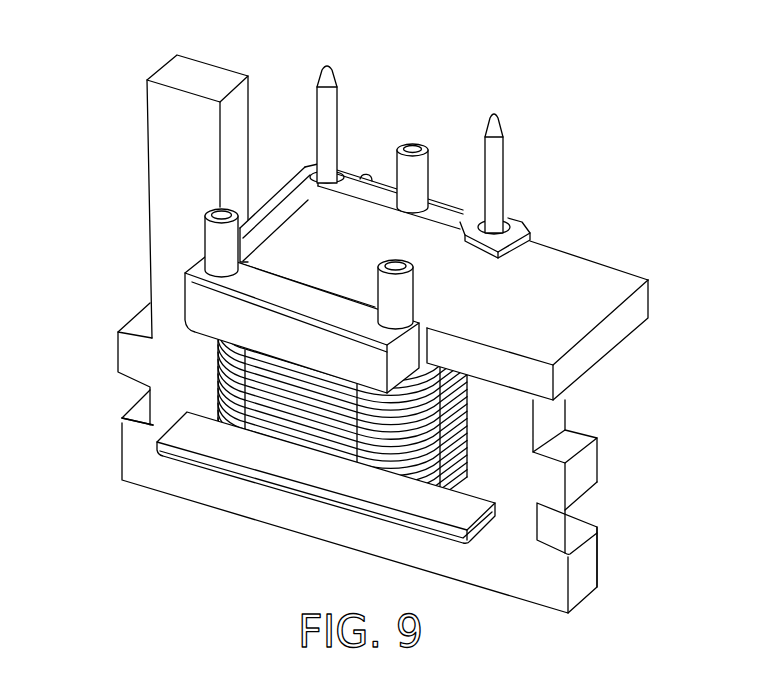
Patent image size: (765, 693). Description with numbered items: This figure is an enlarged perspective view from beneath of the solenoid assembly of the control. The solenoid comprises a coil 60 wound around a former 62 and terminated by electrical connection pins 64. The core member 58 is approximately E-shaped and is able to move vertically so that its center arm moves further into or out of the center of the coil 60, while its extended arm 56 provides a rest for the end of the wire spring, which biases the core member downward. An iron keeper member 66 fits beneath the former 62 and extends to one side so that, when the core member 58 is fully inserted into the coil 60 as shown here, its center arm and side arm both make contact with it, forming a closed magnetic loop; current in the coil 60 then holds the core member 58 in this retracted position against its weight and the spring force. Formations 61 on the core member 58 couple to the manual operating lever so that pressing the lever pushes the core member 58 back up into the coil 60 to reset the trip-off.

The extended arm 56 is at (158, 126).
The core member 58 is at (502, 574).
The coil 60 is at (402, 498).
The formations 61 is at (123, 432).
The former 62 is at (207, 305).
The electrical connection pins 64 is at (328, 95).
The iron keeper member 66 is at (550, 313).